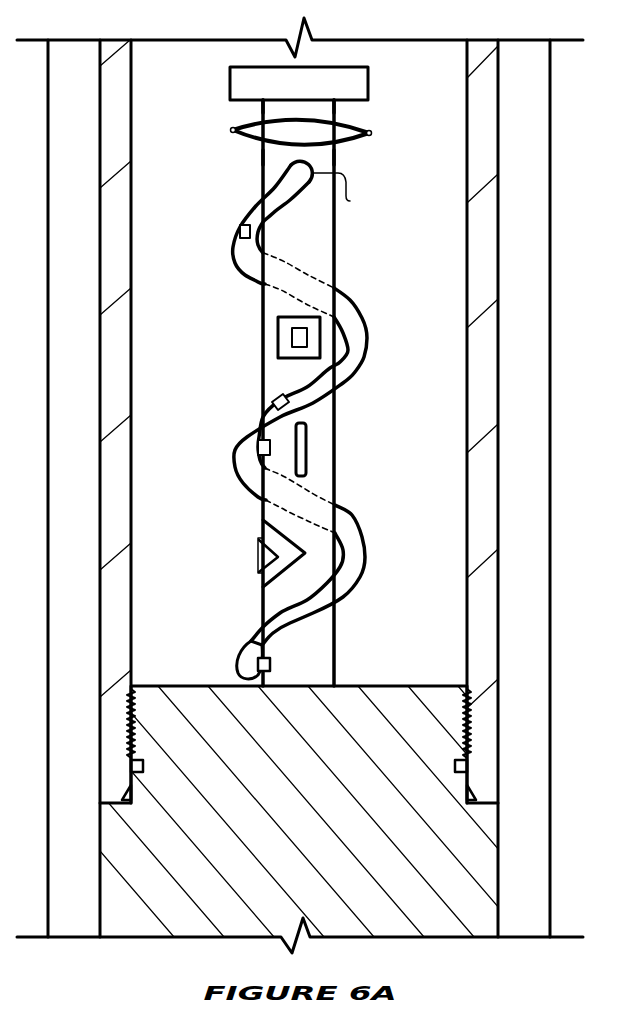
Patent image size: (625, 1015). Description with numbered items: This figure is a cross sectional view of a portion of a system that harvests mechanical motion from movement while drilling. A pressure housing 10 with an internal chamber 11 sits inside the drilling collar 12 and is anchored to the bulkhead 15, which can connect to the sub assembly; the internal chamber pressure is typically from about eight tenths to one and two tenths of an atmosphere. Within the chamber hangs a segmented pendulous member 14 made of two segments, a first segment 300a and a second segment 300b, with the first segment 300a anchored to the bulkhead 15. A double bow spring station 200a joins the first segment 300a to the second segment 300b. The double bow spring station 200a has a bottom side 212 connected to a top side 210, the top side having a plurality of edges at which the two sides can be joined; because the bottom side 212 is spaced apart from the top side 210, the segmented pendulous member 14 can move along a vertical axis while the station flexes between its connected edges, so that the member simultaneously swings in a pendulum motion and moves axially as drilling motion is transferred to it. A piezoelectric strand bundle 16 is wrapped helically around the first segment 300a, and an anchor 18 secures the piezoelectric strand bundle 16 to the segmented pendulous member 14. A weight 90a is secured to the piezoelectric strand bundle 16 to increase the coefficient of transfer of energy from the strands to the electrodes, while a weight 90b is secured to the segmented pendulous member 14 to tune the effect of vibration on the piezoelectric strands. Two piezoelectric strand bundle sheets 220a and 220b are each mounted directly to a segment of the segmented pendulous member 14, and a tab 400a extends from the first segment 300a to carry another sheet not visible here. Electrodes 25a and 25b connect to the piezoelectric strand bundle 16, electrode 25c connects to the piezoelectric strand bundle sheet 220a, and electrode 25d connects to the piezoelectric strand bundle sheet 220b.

The pressure housing 10 is at (100, 294).
The internal chamber 11 is at (138, 123).
The drilling collar 12 is at (550, 294).
The segmented pendulous member 14 is at (348, 241).
The bulkhead 15 is at (100, 872).
The piezoelectric strand bundle 16 is at (247, 197).
The anchor 18 is at (340, 192).
The electrode 25a is at (278, 397).
The electrode 25b is at (240, 231).
The electrode 25c is at (292, 338).
The electrode 25d is at (262, 557).
The weight 90a is at (246, 634).
The weight 90b is at (369, 74).
The double bow spring station 200a is at (314, 133).
The top side 210 is at (250, 118).
The bottom side 212 is at (250, 144).
The piezoelectric strand bundle sheet 220a is at (278, 322).
The piezoelectric strand bundle sheet 220b is at (266, 533).
The first segment 300a is at (335, 153).
The second segment 300b is at (335, 104).
The tab 400a is at (306, 447).